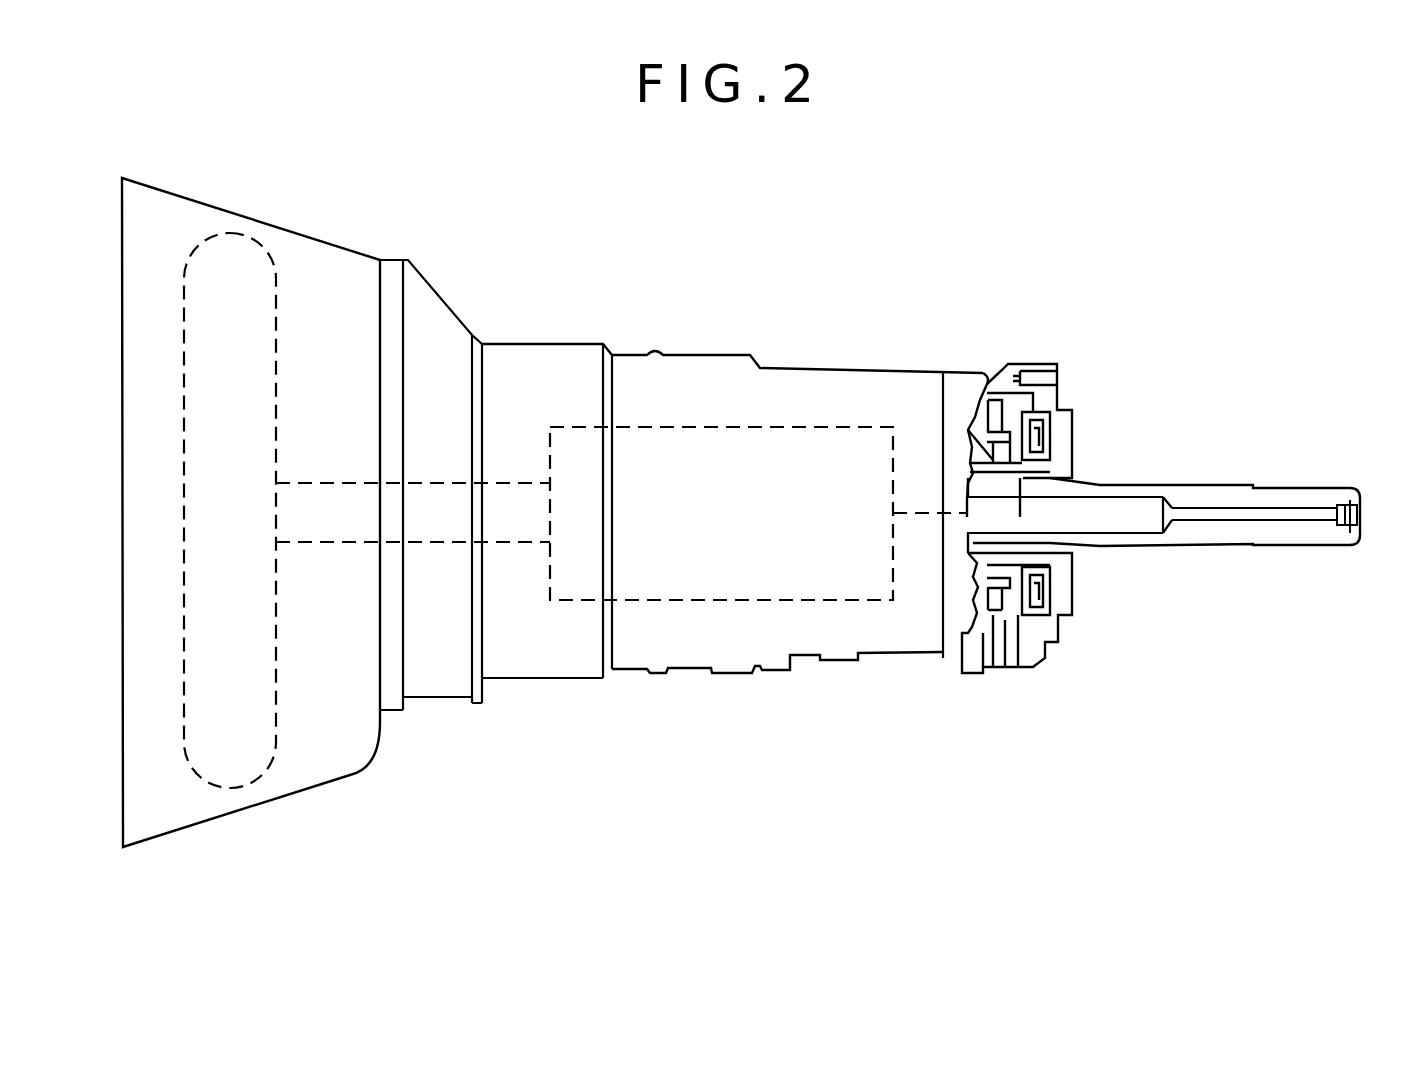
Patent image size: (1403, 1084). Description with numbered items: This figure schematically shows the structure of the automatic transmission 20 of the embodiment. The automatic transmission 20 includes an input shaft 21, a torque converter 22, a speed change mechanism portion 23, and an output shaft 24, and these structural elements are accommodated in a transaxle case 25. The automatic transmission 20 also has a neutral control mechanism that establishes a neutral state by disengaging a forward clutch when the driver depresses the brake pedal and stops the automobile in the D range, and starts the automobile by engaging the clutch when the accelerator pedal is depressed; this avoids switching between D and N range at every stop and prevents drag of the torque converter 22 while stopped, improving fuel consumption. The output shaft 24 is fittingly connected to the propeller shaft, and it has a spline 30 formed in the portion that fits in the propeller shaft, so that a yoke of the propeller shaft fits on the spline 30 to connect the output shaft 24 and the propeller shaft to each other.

The automatic transmission 20 is at (1077, 218).
The input shaft 21 is at (442, 545).
The torque converter 22 is at (229, 790).
The speed change mechanism portion 23 is at (797, 605).
The output shaft 24 is at (1217, 482).
The transaxle case 25 is at (708, 354).
The spline 30 is at (1318, 487).